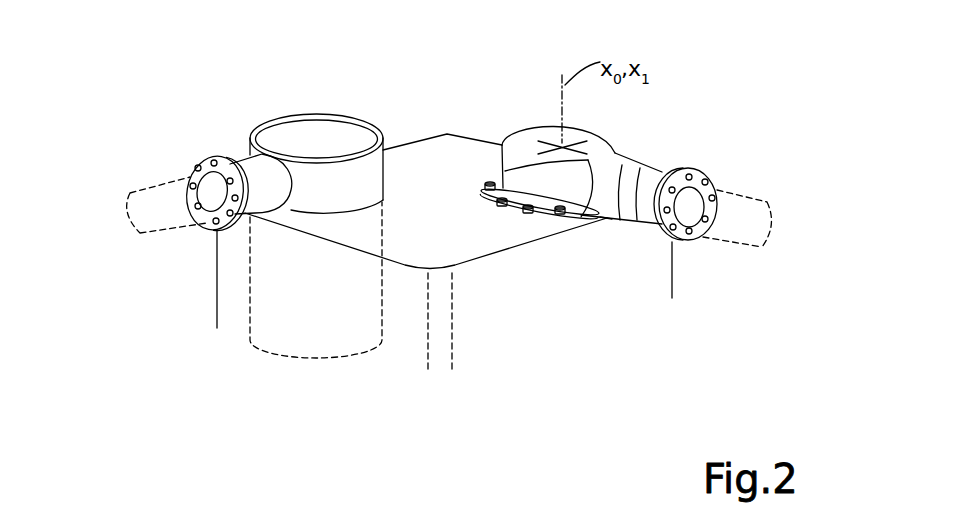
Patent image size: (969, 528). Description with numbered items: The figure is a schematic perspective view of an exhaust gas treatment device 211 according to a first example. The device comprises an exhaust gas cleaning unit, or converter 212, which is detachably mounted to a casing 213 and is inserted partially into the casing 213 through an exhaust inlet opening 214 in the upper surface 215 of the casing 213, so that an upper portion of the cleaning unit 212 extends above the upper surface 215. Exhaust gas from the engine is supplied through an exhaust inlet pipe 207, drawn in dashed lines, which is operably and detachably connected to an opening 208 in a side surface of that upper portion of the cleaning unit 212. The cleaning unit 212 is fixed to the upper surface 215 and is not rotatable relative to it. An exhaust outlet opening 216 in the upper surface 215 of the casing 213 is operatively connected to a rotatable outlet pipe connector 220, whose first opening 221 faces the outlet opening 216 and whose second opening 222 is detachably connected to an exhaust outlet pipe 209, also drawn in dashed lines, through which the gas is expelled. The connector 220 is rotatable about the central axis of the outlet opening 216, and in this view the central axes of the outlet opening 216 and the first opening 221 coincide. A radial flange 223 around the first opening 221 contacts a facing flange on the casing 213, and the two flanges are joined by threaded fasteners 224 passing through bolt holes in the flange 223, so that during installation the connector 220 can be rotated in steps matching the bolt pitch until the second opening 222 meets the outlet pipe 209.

The exhaust inlet pipe 207 is at (153, 195).
The opening 208 is at (212, 188).
The exhaust outlet pipe 209 is at (753, 203).
The exhaust gas treatment device 211 is at (468, 113).
The exhaust gas cleaning unit 212 is at (312, 172).
The casing 213 is at (587, 282).
The exhaust inlet opening 214 is at (322, 245).
The upper surface 215 is at (443, 157).
The exhaust outlet opening 216 is at (613, 239).
The rotatable outlet pipe connector 220 is at (648, 130).
The first opening 221 is at (487, 220).
The second opening 222 is at (692, 200).
The radial flange 223 is at (553, 226).
The threaded fasteners 224 is at (518, 226).